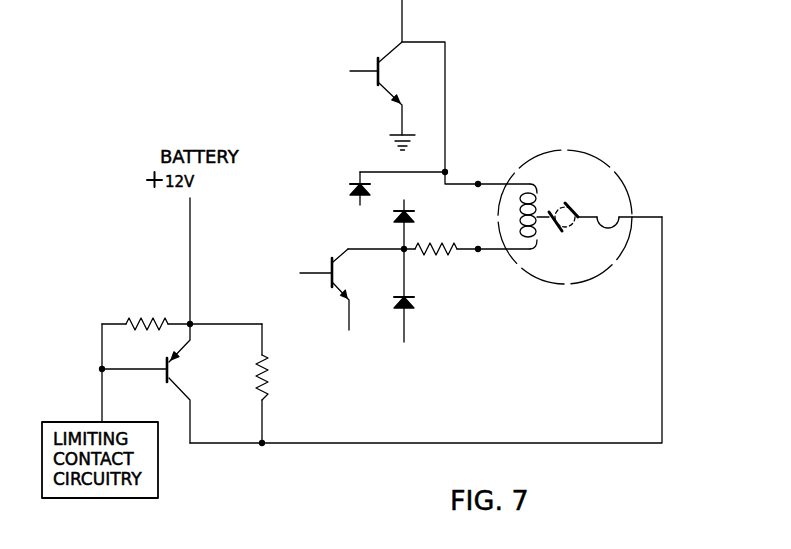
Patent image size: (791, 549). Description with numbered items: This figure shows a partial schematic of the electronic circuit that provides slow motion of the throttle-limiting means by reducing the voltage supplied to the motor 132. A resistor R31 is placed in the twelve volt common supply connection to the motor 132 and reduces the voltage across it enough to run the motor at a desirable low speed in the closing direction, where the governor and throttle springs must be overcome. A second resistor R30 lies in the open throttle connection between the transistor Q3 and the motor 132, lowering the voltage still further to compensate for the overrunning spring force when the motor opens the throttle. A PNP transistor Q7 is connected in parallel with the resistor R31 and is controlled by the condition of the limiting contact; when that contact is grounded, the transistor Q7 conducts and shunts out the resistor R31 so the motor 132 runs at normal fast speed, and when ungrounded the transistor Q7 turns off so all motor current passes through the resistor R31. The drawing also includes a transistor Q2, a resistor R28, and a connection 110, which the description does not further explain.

The connection to control circuit 110 is at (207, 2).
The motor 132 is at (615, 170).
The transistor Q2 is at (385, 88).
The transistor Q3 is at (336, 289).
The PNP transistor Q7 is at (190, 383).
The resistor R28 10K R28 is at (147, 321).
The second resistor R30 is at (436, 251).
The resistor R31 is at (286, 376).